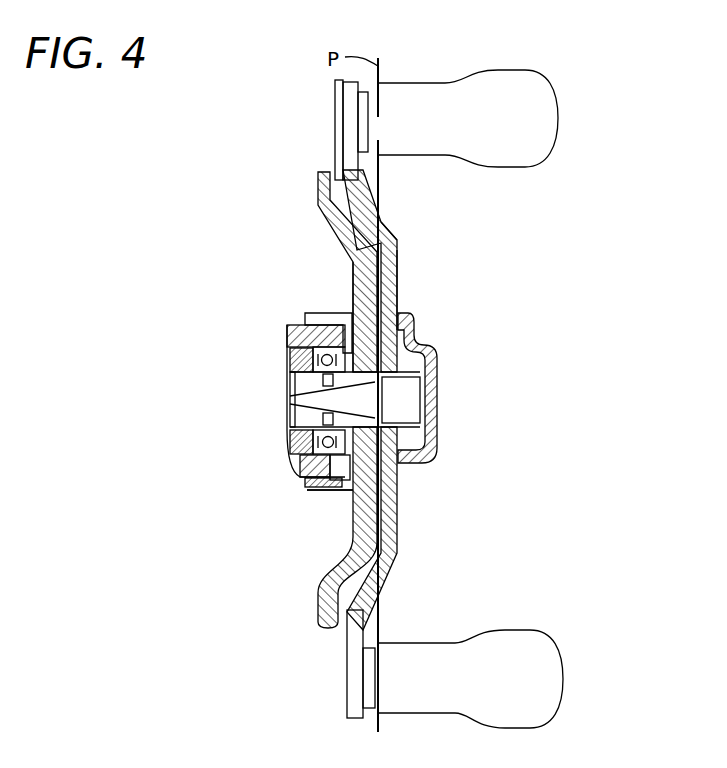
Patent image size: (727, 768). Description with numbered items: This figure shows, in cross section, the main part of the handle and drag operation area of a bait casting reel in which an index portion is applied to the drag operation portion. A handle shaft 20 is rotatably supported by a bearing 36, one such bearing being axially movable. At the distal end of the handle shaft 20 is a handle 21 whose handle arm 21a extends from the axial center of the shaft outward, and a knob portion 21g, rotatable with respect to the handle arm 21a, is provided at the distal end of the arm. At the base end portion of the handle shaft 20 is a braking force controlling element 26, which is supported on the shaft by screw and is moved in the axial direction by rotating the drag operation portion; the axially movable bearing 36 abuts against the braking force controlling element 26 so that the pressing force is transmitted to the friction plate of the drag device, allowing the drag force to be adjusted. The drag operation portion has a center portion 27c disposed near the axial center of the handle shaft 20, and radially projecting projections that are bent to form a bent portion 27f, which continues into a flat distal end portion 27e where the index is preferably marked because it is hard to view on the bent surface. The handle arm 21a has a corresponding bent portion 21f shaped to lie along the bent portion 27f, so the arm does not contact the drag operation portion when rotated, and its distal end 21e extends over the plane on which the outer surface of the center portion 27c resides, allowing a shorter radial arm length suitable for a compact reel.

The handle shaft 20 is at (403, 397).
The handle 21 is at (425, 80).
The handle arm 21a is at (398, 268).
The distal end 21e is at (342, 80).
The bent portion 21f is at (410, 246).
The knob portion 21g is at (533, 120).
The braking force controlling element 26 is at (325, 494).
The center portion 27c is at (355, 312).
The distal end portion 27e is at (313, 178).
The bent portion 27f is at (345, 292).
The bearing 36 is at (307, 313).